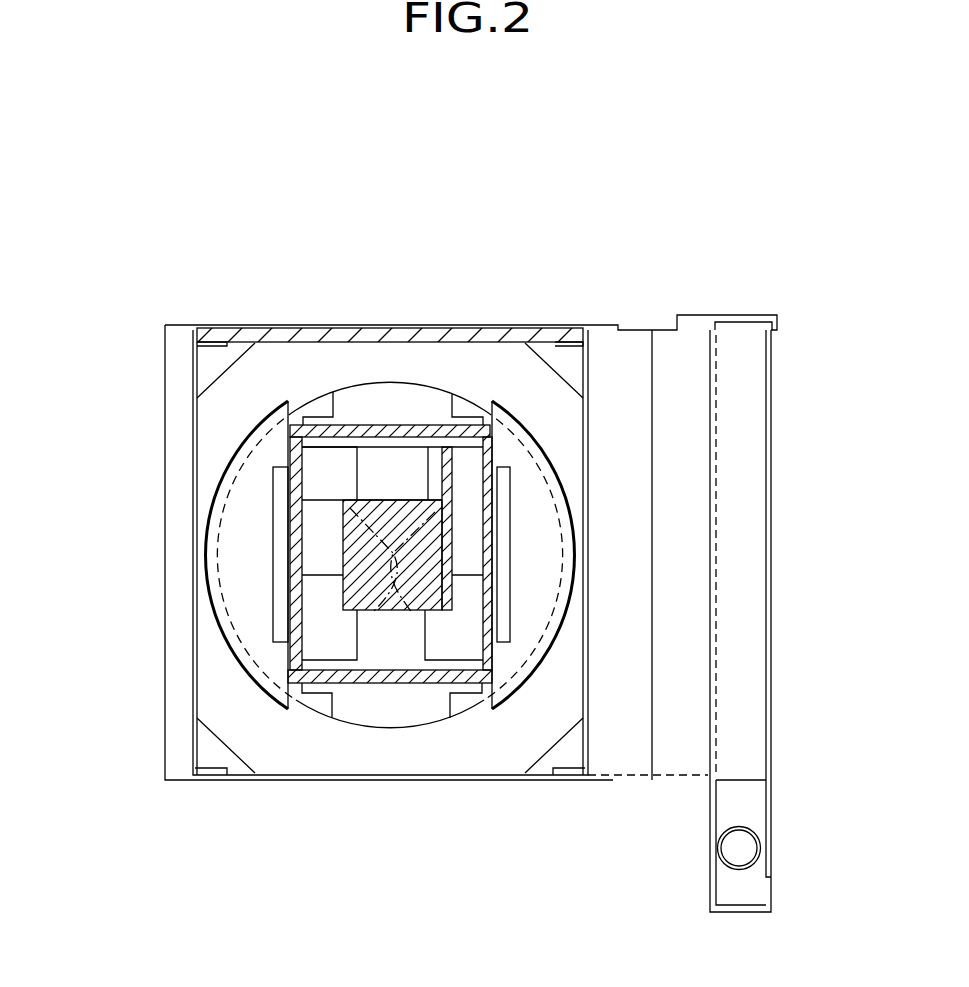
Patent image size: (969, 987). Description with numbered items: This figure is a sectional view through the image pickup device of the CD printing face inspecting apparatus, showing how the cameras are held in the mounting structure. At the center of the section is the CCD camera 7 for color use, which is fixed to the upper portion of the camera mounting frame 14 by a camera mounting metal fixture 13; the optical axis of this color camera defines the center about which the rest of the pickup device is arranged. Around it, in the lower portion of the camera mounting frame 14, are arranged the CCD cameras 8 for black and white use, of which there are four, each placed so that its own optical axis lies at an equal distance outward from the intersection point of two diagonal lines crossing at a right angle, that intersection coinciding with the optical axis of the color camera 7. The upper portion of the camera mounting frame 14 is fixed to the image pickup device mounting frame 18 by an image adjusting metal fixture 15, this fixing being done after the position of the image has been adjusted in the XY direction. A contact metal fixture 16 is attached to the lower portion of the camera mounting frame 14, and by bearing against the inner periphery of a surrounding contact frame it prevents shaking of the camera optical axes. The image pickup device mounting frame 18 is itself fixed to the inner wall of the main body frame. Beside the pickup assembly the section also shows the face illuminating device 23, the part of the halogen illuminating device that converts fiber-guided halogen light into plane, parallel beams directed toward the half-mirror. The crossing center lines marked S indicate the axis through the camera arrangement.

The CCD camera for color use 7 is at (357, 553).
The CCD camera for black and white use 8 is at (467, 467).
The camera mounting metal fixture 13 is at (407, 440).
The camera mounting frame 14 is at (495, 452).
The image adjusting metal fixture 15 is at (535, 497).
The contact metal fixture 16 is at (345, 408).
The image pickup device mounting frame 18 is at (228, 697).
The face illuminating device 23 is at (772, 690).
The axis S is at (372, 613).